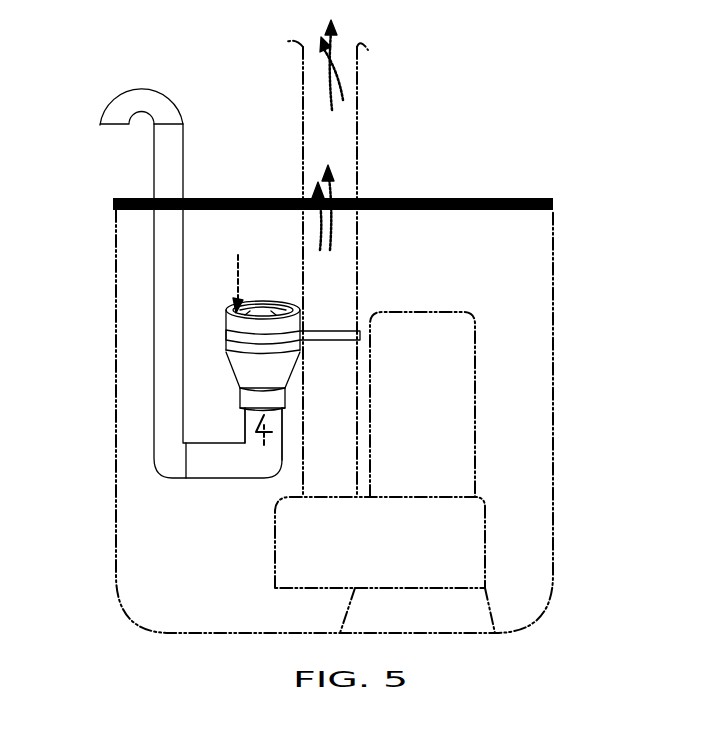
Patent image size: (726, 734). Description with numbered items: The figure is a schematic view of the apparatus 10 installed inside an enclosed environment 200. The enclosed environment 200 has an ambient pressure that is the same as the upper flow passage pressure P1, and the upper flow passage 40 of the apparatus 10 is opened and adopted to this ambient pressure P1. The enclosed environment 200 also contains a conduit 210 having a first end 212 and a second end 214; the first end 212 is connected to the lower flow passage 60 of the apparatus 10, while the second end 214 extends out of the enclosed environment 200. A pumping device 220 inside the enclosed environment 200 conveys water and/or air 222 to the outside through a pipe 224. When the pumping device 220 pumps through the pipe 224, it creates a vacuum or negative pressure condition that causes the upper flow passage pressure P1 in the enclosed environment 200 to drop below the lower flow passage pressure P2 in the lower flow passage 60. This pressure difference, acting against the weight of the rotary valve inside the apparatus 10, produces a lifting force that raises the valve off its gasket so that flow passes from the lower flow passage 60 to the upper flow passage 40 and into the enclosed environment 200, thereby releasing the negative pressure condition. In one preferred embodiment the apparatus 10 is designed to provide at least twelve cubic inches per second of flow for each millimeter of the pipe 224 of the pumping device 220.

The apparatus 10 is at (270, 296).
The upper flow passage 40 is at (250, 300).
The lower flow passage 60 is at (233, 368).
The enclosed environment 200 is at (498, 193).
The conduit 210 is at (165, 310).
The first end 212 is at (247, 413).
The second end 214 is at (100, 127).
The pumping device 220 is at (483, 505).
The water and/or air 222 is at (328, 197).
The pipe 224 is at (357, 190).
The upper flow passage pressure P1 is at (240, 278).
The lower flow passage pressure P2 is at (262, 445).